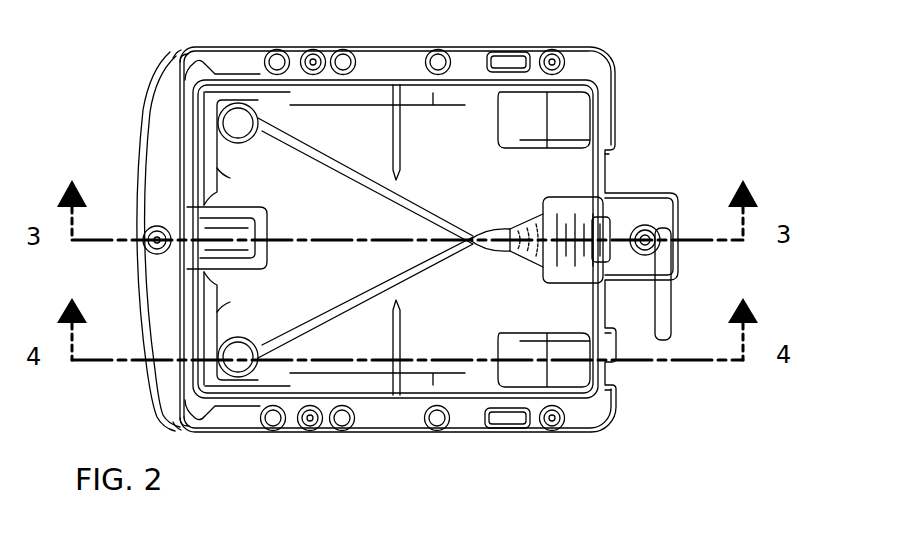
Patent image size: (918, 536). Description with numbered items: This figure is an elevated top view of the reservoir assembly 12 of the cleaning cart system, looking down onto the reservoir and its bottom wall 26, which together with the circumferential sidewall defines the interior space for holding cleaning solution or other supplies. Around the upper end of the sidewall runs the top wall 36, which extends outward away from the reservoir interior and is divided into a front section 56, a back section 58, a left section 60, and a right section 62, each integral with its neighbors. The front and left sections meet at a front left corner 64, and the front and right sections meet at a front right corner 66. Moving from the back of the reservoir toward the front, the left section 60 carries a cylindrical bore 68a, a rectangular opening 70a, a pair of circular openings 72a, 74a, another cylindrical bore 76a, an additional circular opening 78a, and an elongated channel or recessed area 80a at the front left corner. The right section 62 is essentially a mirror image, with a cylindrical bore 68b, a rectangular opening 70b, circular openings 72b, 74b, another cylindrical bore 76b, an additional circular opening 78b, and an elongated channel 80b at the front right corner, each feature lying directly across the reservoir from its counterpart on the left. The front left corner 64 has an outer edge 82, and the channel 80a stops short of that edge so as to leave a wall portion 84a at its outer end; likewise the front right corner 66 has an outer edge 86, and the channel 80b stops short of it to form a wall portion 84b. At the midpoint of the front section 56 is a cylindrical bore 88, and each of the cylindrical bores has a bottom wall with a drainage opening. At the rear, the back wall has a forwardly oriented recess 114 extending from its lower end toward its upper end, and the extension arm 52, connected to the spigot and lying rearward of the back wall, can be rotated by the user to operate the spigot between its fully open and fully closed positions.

The reservoir assembly 12 is at (642, 438).
The bottom wall 26 is at (347, 289).
The top wall 36 is at (603, 52).
The extension arm 52 is at (678, 314).
The front section 56 is at (163, 305).
The back section 58 is at (605, 108).
The left section 60 is at (381, 417).
The right section 62 is at (383, 62).
The front left corner 64 is at (157, 422).
The front right corner 66 is at (155, 60).
The cylindrical bore 68a is at (533, 431).
The cylindrical bore 68b is at (543, 50).
The rectangular opening 70a is at (485, 431).
The rectangular opening 70b is at (487, 50).
The circular opening 72a is at (424, 430).
The circular opening 72b is at (426, 50).
The circular opening 74a is at (332, 430).
The circular opening 74b is at (333, 50).
The cylindrical bore 76a is at (303, 431).
The cylindrical bore 76b is at (300, 50).
The circular opening 78a is at (257, 429).
The circular opening 78b is at (259, 50).
The elongated channel 80a is at (182, 410).
The elongated channel 80b is at (184, 66).
The outer edge 82 is at (167, 427).
The wall portion 84a is at (176, 423).
The wall portion 84b is at (179, 50).
The outer edge 86 is at (170, 55).
The cylindrical bore 88 is at (155, 252).
The recess 114 is at (577, 207).